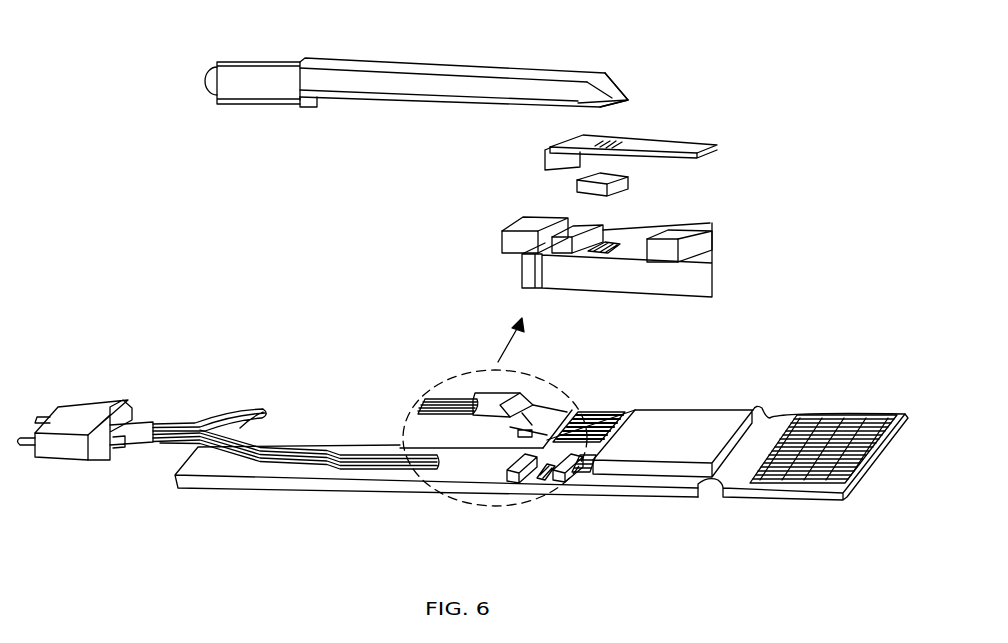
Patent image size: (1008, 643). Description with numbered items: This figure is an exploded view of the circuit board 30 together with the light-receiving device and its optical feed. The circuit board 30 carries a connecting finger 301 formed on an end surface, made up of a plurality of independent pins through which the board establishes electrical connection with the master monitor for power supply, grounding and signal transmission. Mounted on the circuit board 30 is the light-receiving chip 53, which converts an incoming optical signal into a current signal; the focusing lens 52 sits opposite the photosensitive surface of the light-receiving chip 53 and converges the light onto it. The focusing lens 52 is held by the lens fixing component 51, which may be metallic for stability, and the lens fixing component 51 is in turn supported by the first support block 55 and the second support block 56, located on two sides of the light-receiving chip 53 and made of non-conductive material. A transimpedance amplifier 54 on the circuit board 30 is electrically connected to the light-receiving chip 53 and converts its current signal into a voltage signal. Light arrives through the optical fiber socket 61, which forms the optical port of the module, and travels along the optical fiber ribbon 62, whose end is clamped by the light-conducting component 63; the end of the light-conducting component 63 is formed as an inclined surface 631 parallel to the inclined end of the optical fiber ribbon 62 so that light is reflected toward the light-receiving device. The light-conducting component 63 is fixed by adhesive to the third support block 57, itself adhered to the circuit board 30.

The circuit board 30 is at (768, 420).
The connecting finger 301 is at (847, 413).
The lens fixing component 51 is at (667, 145).
The focusing lens 52 is at (627, 188).
The light-receiving chip 53 is at (592, 257).
The transimpedance amplifier 54 is at (622, 255).
The first support block 55 is at (565, 242).
The second support block 56 is at (665, 250).
The third support block 57 is at (520, 242).
The optical fiber socket 61 is at (85, 420).
The optical fiber ribbon 62 is at (305, 447).
The light-conducting component 63 is at (503, 73).
The inclined surface 631 is at (610, 88).